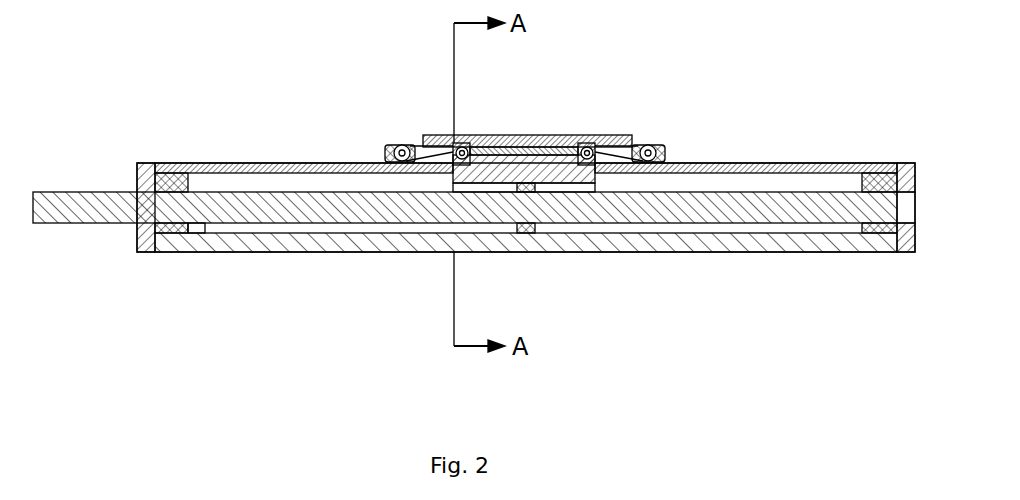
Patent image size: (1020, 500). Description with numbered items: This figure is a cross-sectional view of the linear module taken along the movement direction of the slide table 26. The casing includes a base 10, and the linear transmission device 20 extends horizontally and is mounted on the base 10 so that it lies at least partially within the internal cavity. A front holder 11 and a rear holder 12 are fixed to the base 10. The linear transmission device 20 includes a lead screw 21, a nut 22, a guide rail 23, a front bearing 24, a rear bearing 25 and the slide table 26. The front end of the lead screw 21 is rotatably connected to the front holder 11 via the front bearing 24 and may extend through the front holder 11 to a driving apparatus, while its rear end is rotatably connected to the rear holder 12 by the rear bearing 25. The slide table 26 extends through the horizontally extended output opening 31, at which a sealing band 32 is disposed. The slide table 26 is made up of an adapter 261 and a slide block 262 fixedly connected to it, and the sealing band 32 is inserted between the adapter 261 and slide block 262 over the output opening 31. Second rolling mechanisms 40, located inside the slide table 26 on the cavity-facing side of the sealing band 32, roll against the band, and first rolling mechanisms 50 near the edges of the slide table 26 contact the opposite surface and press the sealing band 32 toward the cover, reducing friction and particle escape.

The base 10 is at (137, 238).
The front holder 11 is at (147, 175).
The rear holder 12 is at (872, 192).
The linear transmission device 20 is at (740, 183).
The lead screw 21 is at (272, 208).
The nut 22 is at (525, 185).
The guide rail 23 is at (387, 227).
The front bearing 24 is at (172, 225).
The rear bearing 25 is at (882, 225).
The slide table 26 is at (577, 148).
The adapter 261 is at (550, 155).
The slide block 262 is at (583, 140).
The output opening 31 is at (507, 185).
The sealing band 32 is at (623, 153).
The second rolling mechanism 40 is at (467, 150).
The first rolling mechanism 50 is at (400, 148).